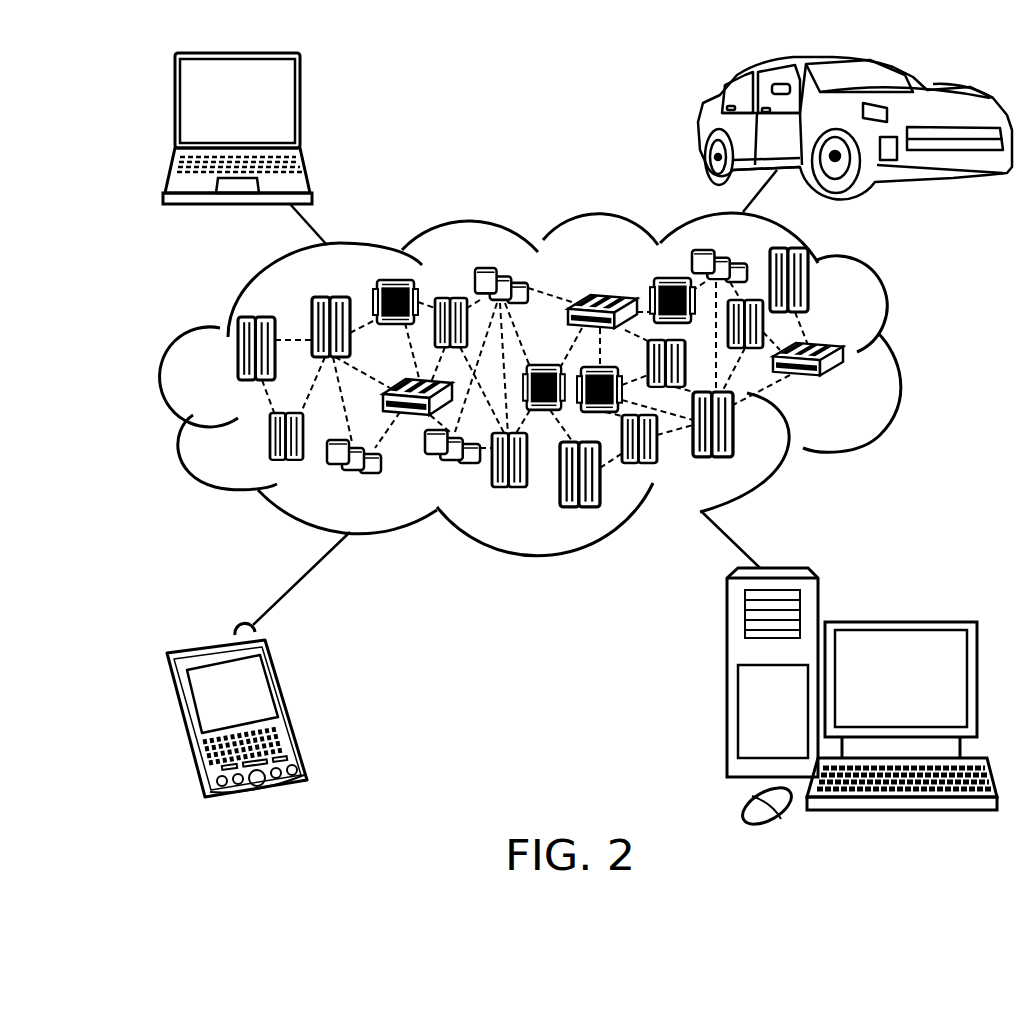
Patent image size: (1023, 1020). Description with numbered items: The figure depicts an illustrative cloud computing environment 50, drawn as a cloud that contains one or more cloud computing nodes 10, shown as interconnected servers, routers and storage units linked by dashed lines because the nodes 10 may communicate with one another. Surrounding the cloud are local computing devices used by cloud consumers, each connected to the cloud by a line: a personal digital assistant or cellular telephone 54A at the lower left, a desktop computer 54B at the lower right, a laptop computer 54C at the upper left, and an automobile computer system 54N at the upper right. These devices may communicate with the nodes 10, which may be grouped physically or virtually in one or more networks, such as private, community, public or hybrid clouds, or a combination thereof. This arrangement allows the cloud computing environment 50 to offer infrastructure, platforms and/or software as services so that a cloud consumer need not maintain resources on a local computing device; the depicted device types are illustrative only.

The cloud computing environment 50 is at (897, 358).
The cloud computing nodes 10 is at (587, 377).
The personal digital assistant or cellular telephone 54A is at (293, 705).
The desktop computer 54B is at (898, 620).
The laptop computer 54C is at (301, 109).
The automobile computer system 54N is at (702, 124).